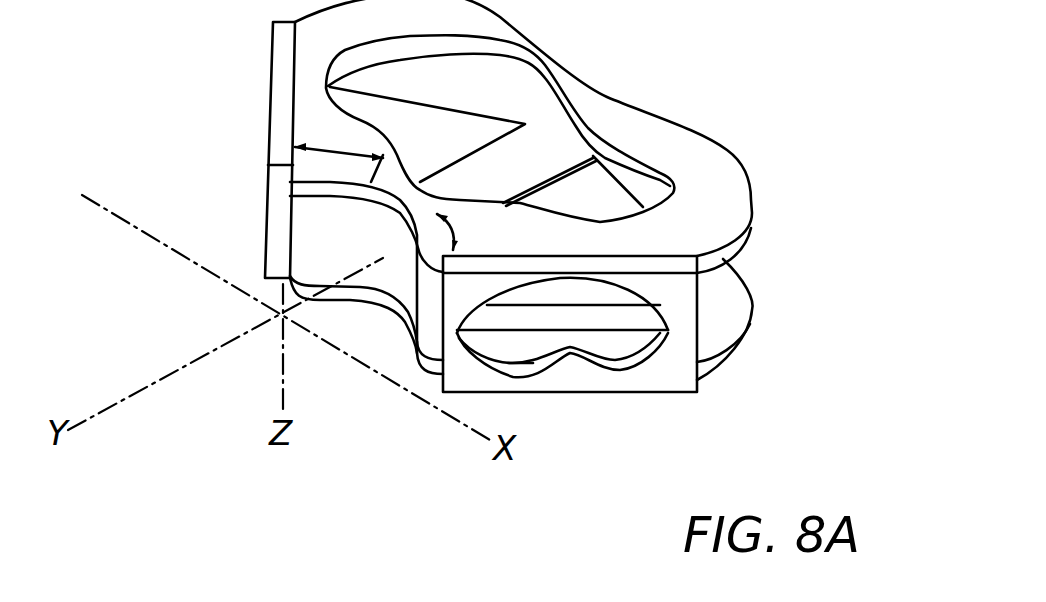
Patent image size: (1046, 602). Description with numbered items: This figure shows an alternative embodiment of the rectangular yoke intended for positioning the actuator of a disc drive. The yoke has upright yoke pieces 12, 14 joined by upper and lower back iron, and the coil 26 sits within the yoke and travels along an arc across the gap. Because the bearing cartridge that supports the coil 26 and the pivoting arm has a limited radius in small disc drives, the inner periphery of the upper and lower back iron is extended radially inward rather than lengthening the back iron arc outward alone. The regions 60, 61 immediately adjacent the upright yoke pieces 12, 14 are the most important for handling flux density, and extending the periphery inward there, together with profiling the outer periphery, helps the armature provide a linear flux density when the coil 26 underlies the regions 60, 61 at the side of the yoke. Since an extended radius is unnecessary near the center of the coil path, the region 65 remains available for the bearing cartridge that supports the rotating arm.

The upright yoke piece 12 is at (270, 216).
The upright yoke piece 14 is at (655, 370).
The coil 26 is at (541, 147).
The region 60 is at (331, 147).
The region 61 is at (455, 239).
The region 65 is at (380, 342).